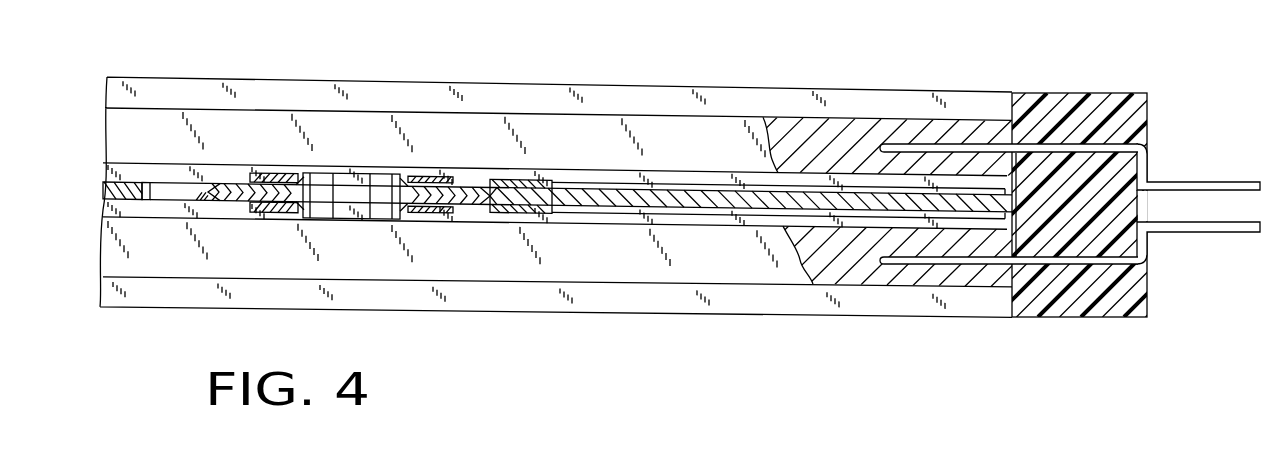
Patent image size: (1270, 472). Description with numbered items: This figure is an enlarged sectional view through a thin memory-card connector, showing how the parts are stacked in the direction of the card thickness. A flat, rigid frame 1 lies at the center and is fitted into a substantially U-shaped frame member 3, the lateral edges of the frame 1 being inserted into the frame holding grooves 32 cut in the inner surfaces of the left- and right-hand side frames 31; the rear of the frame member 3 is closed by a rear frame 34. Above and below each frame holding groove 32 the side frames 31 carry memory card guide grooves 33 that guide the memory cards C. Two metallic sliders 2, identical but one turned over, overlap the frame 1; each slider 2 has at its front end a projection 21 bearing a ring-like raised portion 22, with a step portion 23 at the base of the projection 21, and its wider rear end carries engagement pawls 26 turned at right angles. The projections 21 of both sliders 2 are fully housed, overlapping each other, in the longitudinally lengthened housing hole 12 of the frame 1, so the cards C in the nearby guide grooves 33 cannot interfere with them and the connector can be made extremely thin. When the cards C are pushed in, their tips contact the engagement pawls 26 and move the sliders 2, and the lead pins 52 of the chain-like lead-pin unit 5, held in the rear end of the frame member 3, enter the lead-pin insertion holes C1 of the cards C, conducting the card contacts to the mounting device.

The frame 1 is at (634, 204).
The slider 2 is at (596, 176).
The frame member 3 is at (1045, 90).
The lead-pin unit 5 is at (1215, 150).
The housing hole 12 is at (177, 201).
The projection 21 is at (228, 177).
The ring-like raised portion 22 is at (310, 172).
The step portion 23 is at (485, 180).
The engagement pawl 26 is at (1008, 139).
The side frame 31 is at (370, 79).
The frame holding groove 32 is at (127, 192).
The memory card guide groove 33 is at (718, 116).
The rear frame 34 is at (1133, 280).
The lead pin 52 is at (1103, 142).
The memory card C is at (838, 117).
The lead-pin insertion hole C1 is at (900, 342).